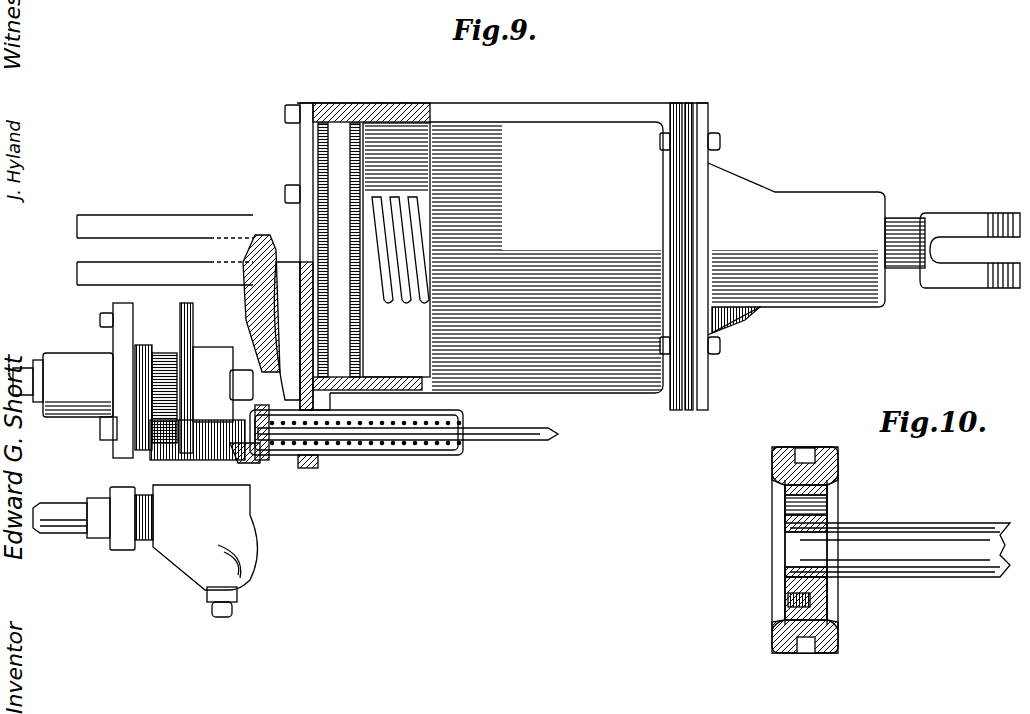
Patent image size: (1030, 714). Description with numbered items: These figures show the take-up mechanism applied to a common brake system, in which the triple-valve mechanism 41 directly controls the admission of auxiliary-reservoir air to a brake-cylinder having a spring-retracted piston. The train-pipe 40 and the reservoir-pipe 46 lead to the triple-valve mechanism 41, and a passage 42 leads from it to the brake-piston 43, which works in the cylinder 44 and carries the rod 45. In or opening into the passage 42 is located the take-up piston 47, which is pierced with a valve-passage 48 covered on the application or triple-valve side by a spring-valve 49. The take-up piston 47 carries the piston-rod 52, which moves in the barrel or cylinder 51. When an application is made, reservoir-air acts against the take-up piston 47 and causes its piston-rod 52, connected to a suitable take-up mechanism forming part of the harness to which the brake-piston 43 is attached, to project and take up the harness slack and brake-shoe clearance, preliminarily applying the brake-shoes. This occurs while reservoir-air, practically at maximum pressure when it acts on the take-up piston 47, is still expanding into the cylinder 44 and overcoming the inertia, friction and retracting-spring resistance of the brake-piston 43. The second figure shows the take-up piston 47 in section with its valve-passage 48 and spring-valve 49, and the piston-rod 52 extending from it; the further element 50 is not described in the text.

In FIG. 9, the train-pipe 40 is at (68, 510).
In FIG. 9, the triple-valve mechanism 41 is at (180, 392).
In FIG. 9, the passage 42 is at (257, 323).
In FIG. 9, the brake-piston 43 is at (367, 323).
In FIG. 9, the cylinder 44 is at (558, 380).
In FIG. 9, the rod 45 is at (926, 278).
In FIG. 9, the reservoir-pipe 46 is at (180, 308).
In FIG. 9, the take-up piston 47 is at (263, 455).
In FIG. 10, the take-up piston 47 is at (785, 550).
In FIG. 10, the valve-passage 48 is at (827, 507).
In FIG. 10, the spring-valve 49 is at (785, 523).
In FIG. 10, the shaft 50 is at (898, 570).
In FIG. 9, the barrel 51 is at (393, 455).
In FIG. 9, the piston-rod 52 is at (463, 448).